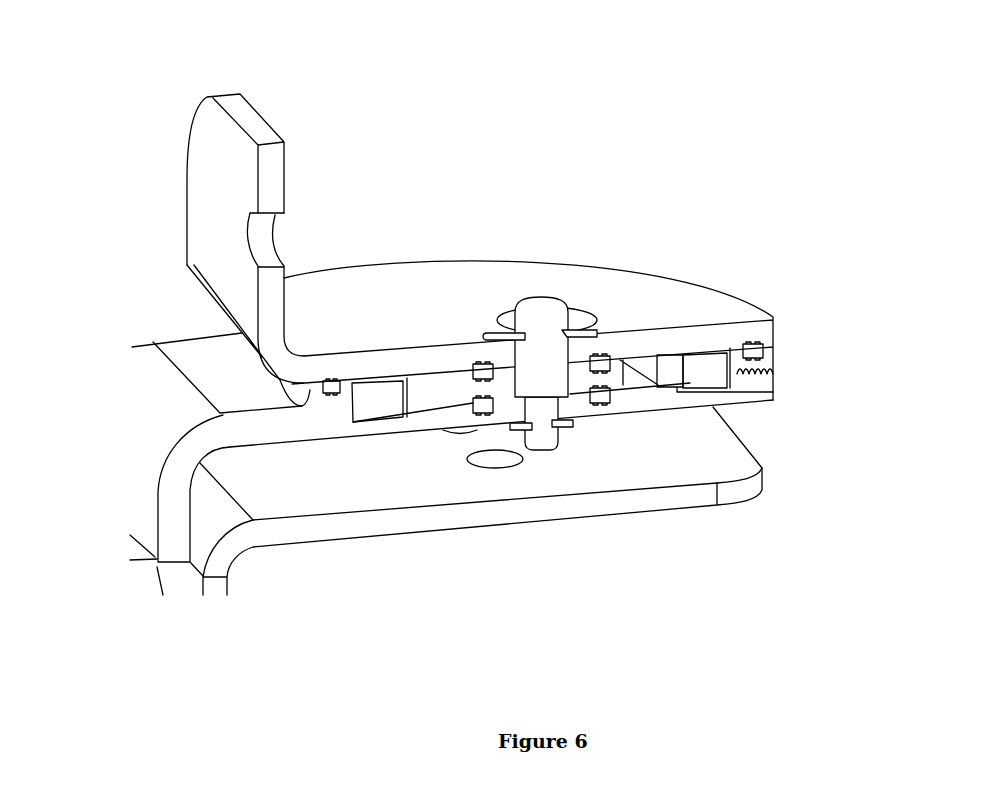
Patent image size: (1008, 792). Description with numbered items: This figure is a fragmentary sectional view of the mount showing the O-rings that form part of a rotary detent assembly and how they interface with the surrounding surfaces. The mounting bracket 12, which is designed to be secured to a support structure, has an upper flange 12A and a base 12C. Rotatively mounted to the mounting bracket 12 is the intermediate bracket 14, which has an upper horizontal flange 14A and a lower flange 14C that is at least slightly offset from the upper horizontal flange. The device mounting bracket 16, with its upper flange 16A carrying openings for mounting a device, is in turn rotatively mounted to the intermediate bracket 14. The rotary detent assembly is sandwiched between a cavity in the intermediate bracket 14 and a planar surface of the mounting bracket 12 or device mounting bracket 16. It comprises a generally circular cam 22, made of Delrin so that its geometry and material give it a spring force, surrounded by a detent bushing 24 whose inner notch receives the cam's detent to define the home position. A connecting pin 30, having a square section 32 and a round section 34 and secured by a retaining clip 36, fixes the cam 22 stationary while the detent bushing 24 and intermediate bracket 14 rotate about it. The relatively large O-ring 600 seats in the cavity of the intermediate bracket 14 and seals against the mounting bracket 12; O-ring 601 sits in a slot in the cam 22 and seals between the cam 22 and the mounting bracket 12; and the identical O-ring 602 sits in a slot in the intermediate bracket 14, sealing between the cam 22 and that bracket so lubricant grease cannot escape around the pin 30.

The mounting bracket 12 is at (441, 211).
The upper flange 12A is at (197, 182).
The base 12C is at (402, 302).
The intermediate bracket 14 is at (168, 412).
The upper horizontal flange 14A is at (198, 352).
The lower flange 14C is at (165, 505).
The device mounting bracket 16 is at (547, 527).
The upper flange 16A is at (705, 452).
The cam 22 is at (435, 385).
The detent bushing 24 is at (705, 367).
The connecting pin 30 is at (556, 293).
The square section 32 is at (580, 347).
The round section 34 is at (541, 424).
The retaining clip 36 is at (591, 311).
The O-ring 600 is at (759, 342).
The O-ring 601 is at (605, 372).
The O-ring 602 is at (486, 426).